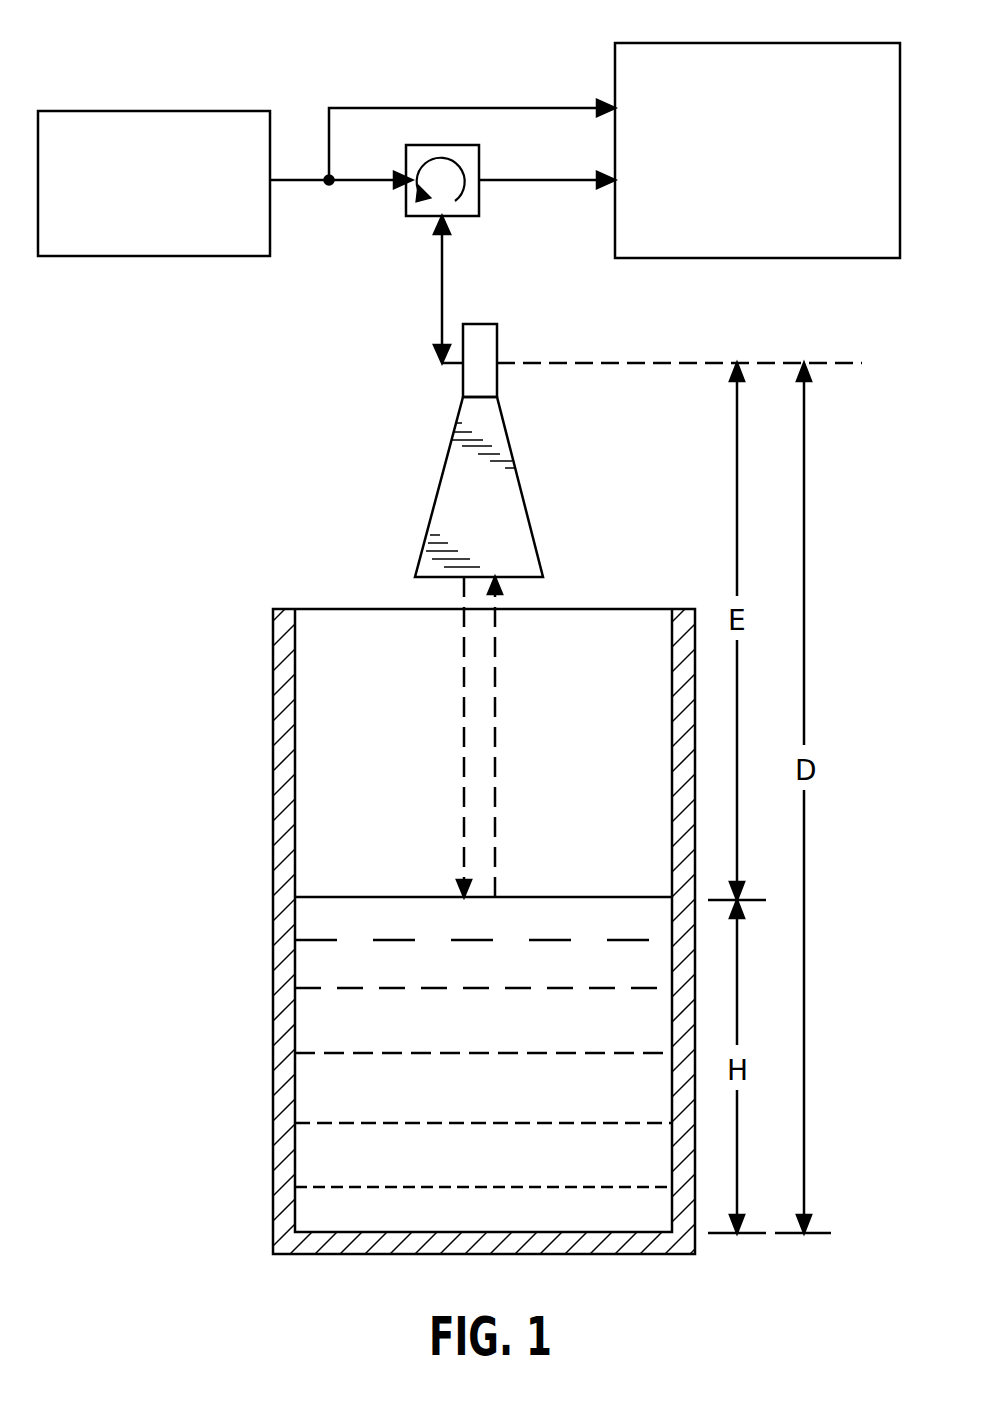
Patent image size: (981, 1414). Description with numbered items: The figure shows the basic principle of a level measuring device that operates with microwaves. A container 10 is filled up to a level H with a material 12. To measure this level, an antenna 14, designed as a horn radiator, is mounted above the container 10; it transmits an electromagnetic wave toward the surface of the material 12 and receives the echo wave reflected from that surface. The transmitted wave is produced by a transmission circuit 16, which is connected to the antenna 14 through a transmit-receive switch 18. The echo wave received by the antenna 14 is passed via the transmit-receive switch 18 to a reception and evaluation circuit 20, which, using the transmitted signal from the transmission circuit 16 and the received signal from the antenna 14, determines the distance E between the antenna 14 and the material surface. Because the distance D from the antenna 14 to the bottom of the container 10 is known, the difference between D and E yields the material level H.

The container 10 is at (284, 780).
The material 12 is at (315, 1104).
The antenna 14 is at (507, 515).
The transmission circuit 16 is at (167, 118).
The transmit-receive switch 18 is at (420, 205).
The reception and evaluation circuit 20 is at (666, 50).